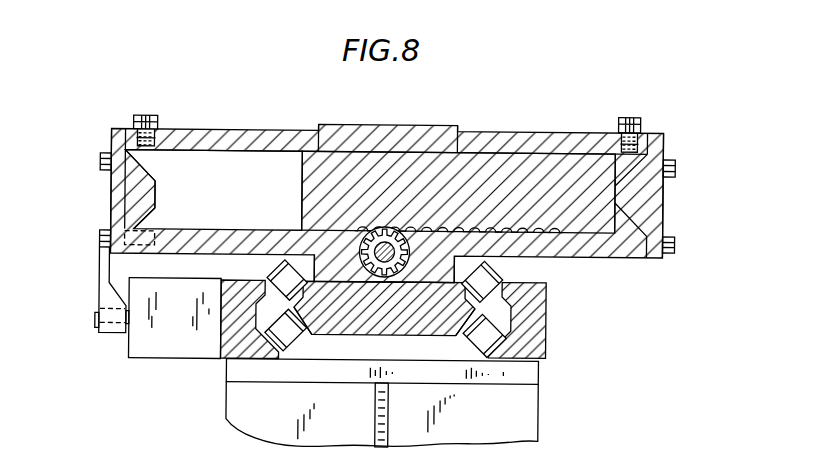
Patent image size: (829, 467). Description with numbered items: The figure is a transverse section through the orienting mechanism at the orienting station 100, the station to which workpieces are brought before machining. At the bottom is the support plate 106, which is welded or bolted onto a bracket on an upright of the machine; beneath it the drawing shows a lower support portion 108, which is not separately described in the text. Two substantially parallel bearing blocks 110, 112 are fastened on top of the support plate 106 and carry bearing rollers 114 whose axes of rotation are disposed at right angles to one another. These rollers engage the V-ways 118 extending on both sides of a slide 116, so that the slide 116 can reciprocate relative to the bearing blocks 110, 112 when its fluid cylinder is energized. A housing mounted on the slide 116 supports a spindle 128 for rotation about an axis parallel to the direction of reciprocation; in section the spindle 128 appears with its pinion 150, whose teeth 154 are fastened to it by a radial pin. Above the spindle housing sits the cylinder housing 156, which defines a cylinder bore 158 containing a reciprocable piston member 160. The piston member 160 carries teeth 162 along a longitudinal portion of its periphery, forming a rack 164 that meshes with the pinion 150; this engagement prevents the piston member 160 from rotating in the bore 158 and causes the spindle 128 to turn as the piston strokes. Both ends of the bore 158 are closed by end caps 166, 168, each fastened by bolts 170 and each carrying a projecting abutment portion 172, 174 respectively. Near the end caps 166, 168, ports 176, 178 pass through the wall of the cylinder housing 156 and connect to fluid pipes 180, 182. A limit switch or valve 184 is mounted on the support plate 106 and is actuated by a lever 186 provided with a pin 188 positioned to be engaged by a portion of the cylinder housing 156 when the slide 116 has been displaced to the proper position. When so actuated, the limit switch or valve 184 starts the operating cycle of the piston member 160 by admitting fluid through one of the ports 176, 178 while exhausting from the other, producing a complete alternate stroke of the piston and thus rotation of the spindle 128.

The orienting station 100 is at (562, 106).
The support plate 106 is at (540, 374).
The support 108 is at (540, 422).
The bearing block 110 is at (219, 364).
The bearing block 112 is at (546, 344).
The bearing rollers 114 is at (273, 272).
The slide 116 is at (378, 325).
The V-ways 118 is at (304, 294).
The spindle 128 is at (362, 248).
The pinion 150 is at (405, 247).
The teeth 154 is at (398, 262).
The cylinder housing 156 is at (205, 139).
The cylinder bore 158 is at (222, 169).
The piston member 160 is at (594, 166).
The teeth 162 is at (522, 226).
The rack 164 is at (553, 226).
The end cap 166 is at (111, 134).
The end cap 168 is at (658, 150).
The bolts 170 is at (100, 166).
The projecting abutment portion 172 is at (125, 196).
The projecting abutment portion 174 is at (624, 193).
The port 176 is at (146, 144).
The port 178 is at (633, 150).
The fluid pipe 180 is at (149, 117).
The fluid pipe 182 is at (641, 118).
The limit switch or valve 184 is at (160, 351).
The lever 186 is at (100, 298).
The pin 188 is at (125, 235).